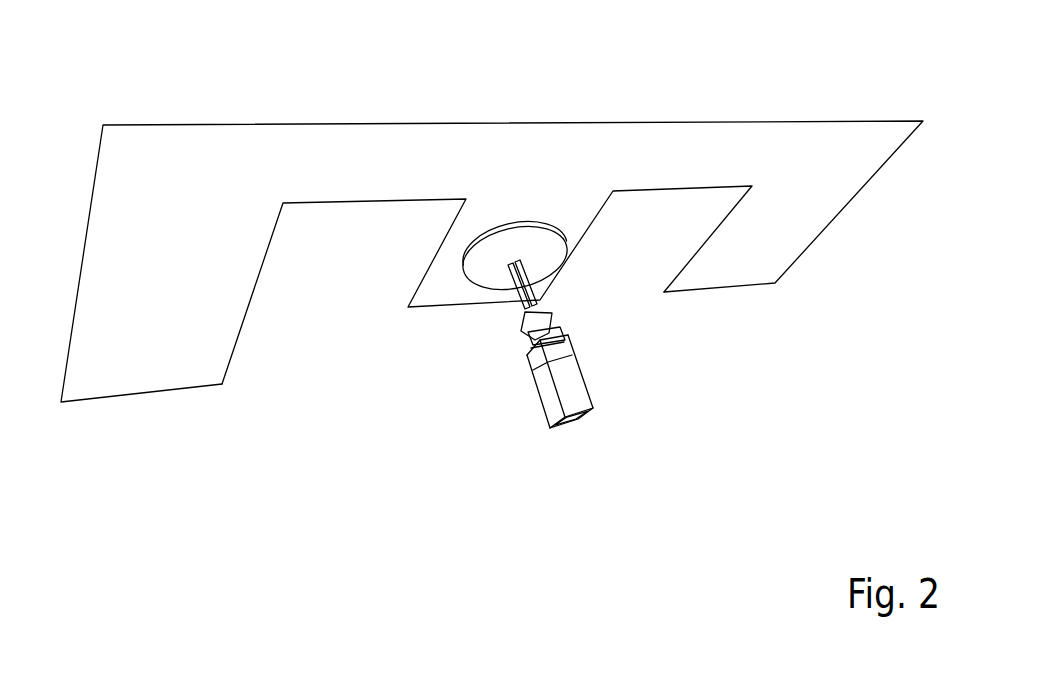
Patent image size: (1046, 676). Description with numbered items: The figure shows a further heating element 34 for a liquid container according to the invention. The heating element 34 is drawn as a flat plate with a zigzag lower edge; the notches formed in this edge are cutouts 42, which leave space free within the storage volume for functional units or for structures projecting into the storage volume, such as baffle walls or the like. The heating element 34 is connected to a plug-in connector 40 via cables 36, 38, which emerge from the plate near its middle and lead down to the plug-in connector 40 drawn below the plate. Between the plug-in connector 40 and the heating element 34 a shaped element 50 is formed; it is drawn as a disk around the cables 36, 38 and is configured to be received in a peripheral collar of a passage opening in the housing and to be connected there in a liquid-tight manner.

The heating element 34 is at (127, 168).
The cutouts 42 is at (364, 266).
The shaped element 50 is at (498, 246).
The cable 38 is at (528, 260).
The cable 36 is at (520, 307).
The plug-in connector 40 is at (572, 385).